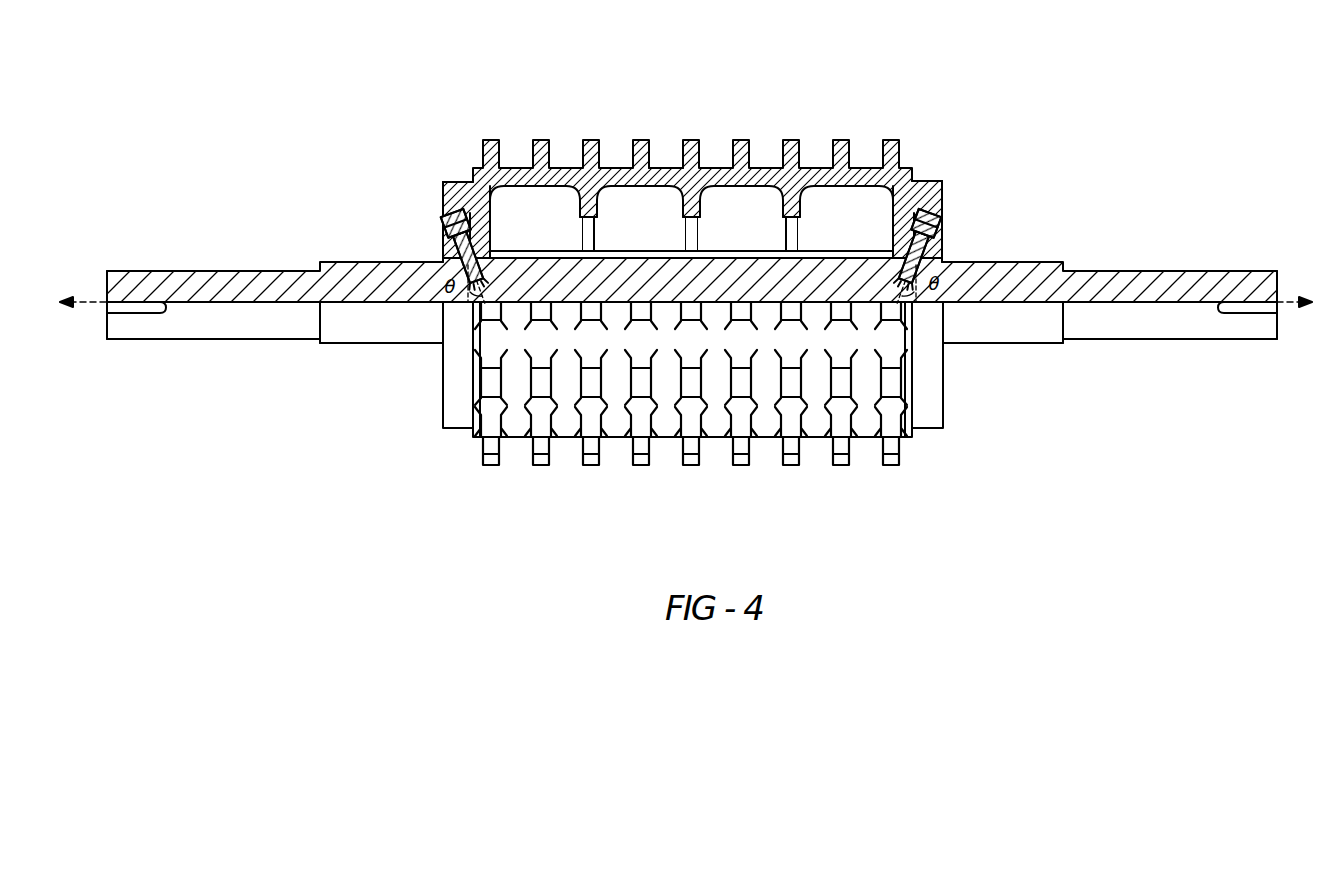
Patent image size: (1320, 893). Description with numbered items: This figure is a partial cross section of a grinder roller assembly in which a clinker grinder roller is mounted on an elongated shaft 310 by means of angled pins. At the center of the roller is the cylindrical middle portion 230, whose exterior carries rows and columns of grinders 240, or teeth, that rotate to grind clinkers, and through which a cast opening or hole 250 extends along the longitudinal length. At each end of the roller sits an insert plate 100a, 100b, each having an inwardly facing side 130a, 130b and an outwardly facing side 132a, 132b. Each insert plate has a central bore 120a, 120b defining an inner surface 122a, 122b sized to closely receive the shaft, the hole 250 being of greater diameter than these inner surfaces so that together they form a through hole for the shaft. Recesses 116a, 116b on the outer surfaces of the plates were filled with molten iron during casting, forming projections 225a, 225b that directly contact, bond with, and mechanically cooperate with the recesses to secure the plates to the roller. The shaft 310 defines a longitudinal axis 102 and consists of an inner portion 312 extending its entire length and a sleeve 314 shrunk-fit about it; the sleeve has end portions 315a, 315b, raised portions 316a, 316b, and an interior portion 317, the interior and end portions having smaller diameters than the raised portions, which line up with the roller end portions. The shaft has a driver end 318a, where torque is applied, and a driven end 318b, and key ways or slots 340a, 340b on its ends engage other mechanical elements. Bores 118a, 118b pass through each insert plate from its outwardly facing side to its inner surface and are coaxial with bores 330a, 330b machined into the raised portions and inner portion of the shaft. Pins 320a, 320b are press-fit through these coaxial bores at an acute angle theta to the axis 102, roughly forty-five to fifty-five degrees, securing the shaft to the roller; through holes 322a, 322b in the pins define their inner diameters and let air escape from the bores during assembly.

The insert plate 100a is at (927, 212).
The second insert plate 100b is at (460, 212).
The longitudinal axis 102 is at (1298, 307).
The recess 116a is at (922, 212).
The recess 116b is at (458, 212).
The bore 118a is at (947, 217).
The bore 118b is at (457, 217).
The central bore 120a is at (947, 262).
The central bore 120b is at (442, 260).
The inner surface 122a is at (945, 247).
The inner surface 122b is at (443, 245).
The inwardly facing side 130a is at (943, 400).
The inwardly facing side 130b is at (442, 383).
The outwardly facing side 132a is at (910, 375).
The outwardly facing side 132b is at (475, 372).
The projection 225a is at (926, 223).
The projection 225b is at (455, 223).
The middle portion 230 is at (723, 168).
The grinders 240 is at (688, 167).
The opening or hole 250 is at (768, 250).
The elongated shaft 310 is at (1183, 265).
The inner portion 312 is at (1175, 305).
The sleeve 314 is at (943, 305).
The end portion 315a is at (1035, 333).
The end portion 315b is at (355, 333).
The raised portion 316a is at (1002, 330).
The raised portion 316b is at (472, 300).
The interior portion 317 is at (617, 282).
The driver end 318a is at (1280, 272).
The driven end 318b is at (100, 275).
The pin 320a is at (943, 224).
The pin 320b is at (445, 226).
The through hole 322a is at (917, 250).
The through hole 322b is at (462, 256).
The bore 330a is at (907, 247).
The bore 330b is at (491, 240).
The key way or slot 340a is at (1245, 310).
The key way or slot 340b is at (140, 308).